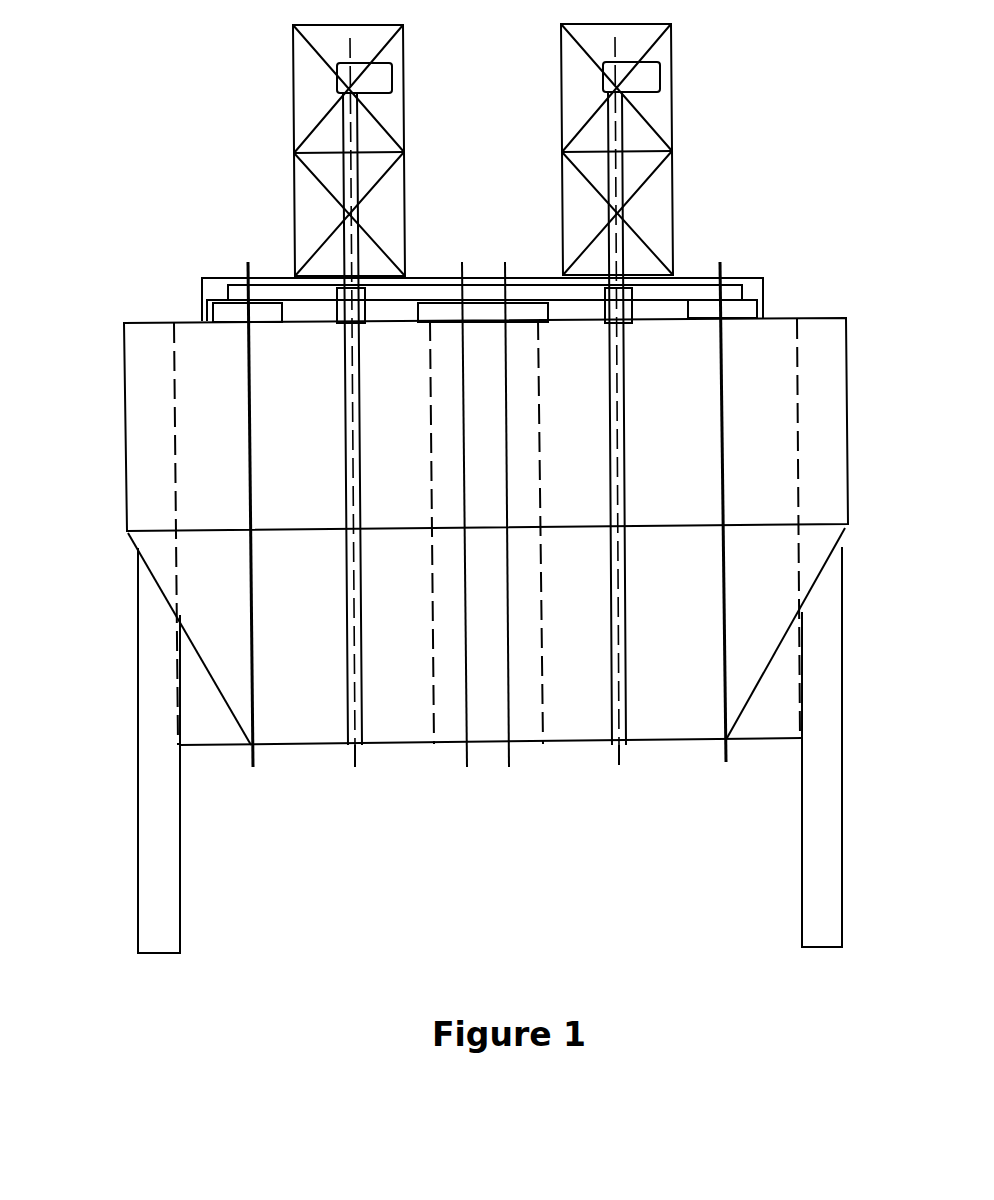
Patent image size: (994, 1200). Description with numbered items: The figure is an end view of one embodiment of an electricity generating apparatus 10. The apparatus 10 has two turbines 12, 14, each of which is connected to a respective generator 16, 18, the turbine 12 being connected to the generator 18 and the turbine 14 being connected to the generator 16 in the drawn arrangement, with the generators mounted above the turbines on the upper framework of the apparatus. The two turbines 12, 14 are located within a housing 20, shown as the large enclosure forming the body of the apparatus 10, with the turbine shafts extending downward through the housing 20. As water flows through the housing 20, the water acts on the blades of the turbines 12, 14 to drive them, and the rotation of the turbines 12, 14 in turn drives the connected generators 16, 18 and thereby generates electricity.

The electricity generating apparatus 10 is at (117, 690).
The turbine 12 is at (299, 396).
The turbine 14 is at (699, 394).
The generator 16 is at (658, 75).
The generator 18 is at (337, 74).
The housing 20 is at (832, 377).